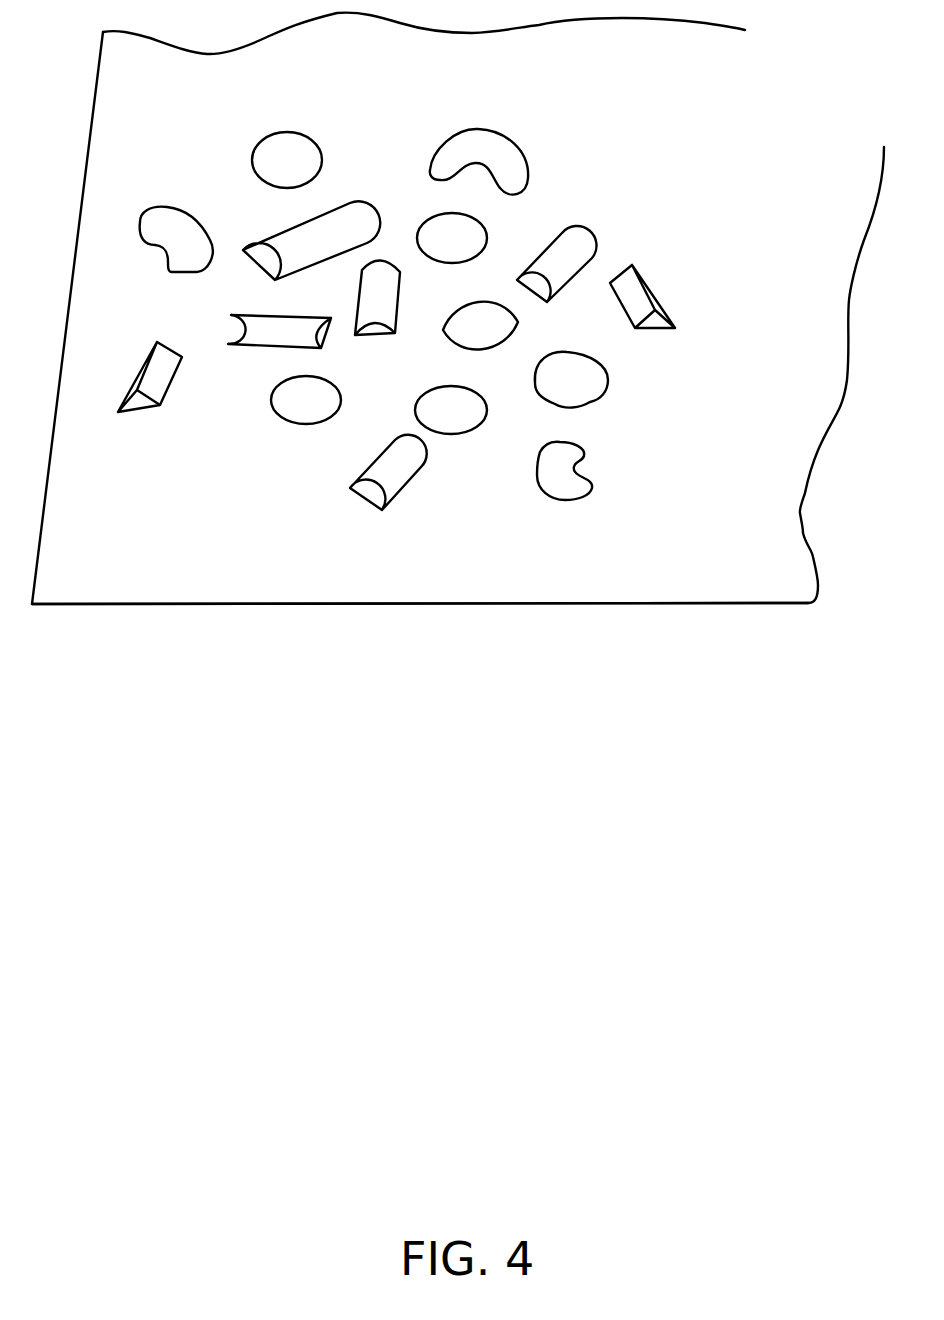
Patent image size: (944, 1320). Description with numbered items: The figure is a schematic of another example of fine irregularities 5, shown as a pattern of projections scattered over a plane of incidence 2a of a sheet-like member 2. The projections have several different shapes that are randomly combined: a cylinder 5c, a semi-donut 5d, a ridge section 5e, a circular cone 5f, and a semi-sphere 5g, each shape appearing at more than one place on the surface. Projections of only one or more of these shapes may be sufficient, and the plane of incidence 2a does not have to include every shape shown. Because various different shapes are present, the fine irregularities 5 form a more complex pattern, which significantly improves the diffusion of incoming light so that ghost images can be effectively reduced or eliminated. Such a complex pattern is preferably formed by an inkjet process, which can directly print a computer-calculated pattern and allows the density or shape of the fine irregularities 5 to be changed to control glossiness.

The substrate 2 is at (458, 604).
The plane of incidence 2a is at (598, 582).
The fine irregularities 5 is at (772, 153).
The cylinder projection 5c is at (342, 214).
The semi-donut projection 5d is at (504, 153).
The ridge section projection 5e is at (138, 403).
The circular cone projection 5f is at (600, 387).
The semi-sphere projection 5g is at (288, 410).